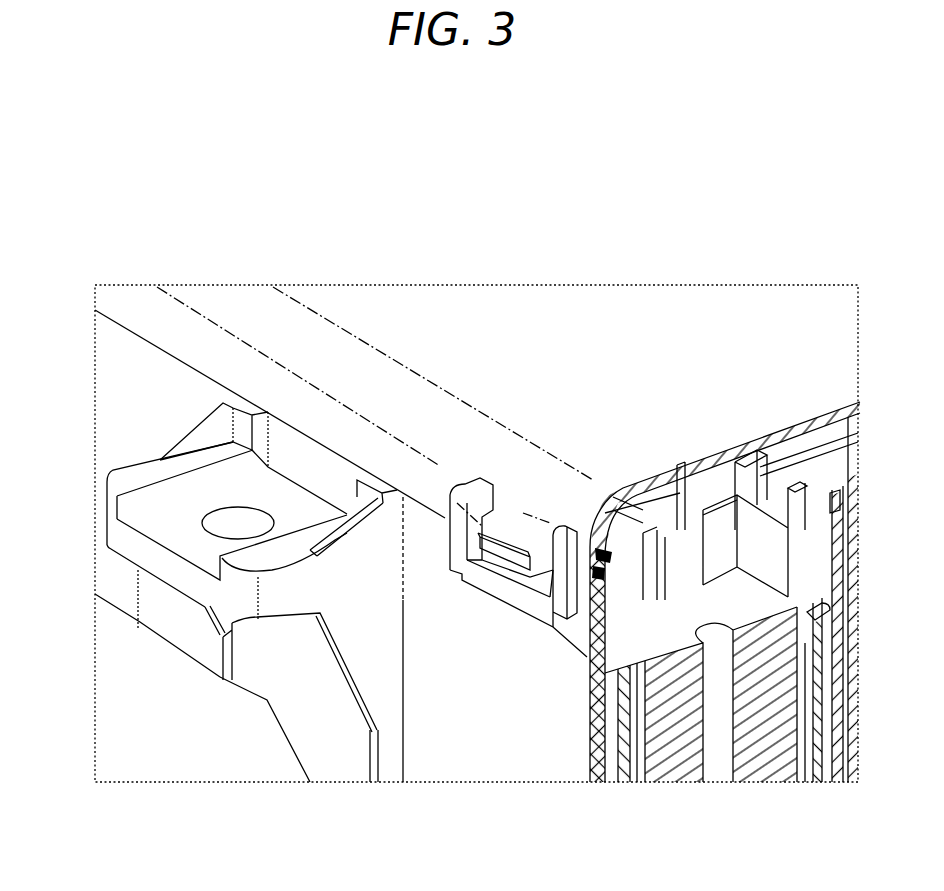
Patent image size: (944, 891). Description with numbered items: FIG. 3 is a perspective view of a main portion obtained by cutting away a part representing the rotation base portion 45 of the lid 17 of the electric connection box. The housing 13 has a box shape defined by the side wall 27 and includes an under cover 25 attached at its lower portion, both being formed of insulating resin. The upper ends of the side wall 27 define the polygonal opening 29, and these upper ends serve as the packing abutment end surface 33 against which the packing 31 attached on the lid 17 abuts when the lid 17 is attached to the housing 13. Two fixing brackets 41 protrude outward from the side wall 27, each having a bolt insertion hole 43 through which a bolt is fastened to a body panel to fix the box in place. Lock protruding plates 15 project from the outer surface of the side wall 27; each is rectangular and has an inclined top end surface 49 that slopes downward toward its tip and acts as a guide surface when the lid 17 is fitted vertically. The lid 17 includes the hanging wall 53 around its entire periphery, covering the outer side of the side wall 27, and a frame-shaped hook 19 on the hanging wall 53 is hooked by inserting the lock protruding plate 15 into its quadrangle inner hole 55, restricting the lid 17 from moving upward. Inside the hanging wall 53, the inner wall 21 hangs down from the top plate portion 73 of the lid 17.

The housing 13 is at (332, 772).
The lock protruding plate 15 is at (490, 535).
The lid 17 is at (720, 300).
The hook 19 is at (436, 485).
The inner wall 21 is at (615, 546).
The under cover 25 is at (157, 722).
The side wall 27 is at (600, 738).
The opening 29 is at (603, 597).
The packing 31 is at (598, 540).
The packing abutment end surface 33 is at (603, 512).
The fixing bracket 41 is at (232, 595).
The bolt insertion hole 43 is at (227, 520).
The rotation base portion 45 is at (446, 413).
The inclined top end surface 49 is at (500, 567).
The hanging wall 53 is at (160, 323).
The inner hole 55 is at (512, 550).
The top plate portion 73 is at (682, 324).